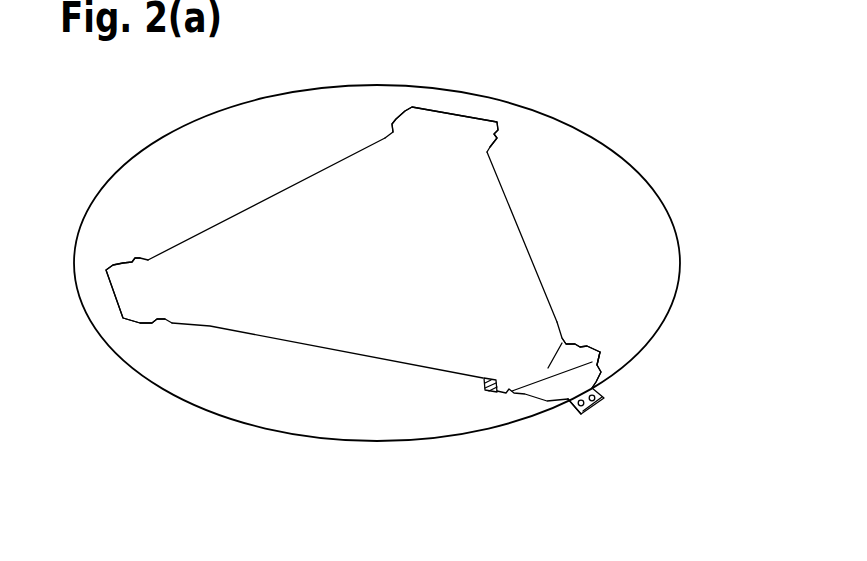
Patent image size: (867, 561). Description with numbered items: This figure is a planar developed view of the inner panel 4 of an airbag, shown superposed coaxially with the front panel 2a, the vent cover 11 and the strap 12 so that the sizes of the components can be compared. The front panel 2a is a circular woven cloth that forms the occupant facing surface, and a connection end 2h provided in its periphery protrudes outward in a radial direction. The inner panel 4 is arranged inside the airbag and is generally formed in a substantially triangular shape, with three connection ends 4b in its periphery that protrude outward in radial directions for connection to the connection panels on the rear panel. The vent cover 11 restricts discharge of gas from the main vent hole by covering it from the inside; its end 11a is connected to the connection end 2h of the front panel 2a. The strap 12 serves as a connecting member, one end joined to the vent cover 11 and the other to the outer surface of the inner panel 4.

The front panel 2a is at (610, 192).
The connection end 2h is at (570, 404).
The inner panel 4 is at (225, 223).
The connection ends 4b is at (450, 120).
The vent cover 11 is at (601, 369).
The end of vent cover 11a is at (592, 410).
The strap 12 is at (488, 397).